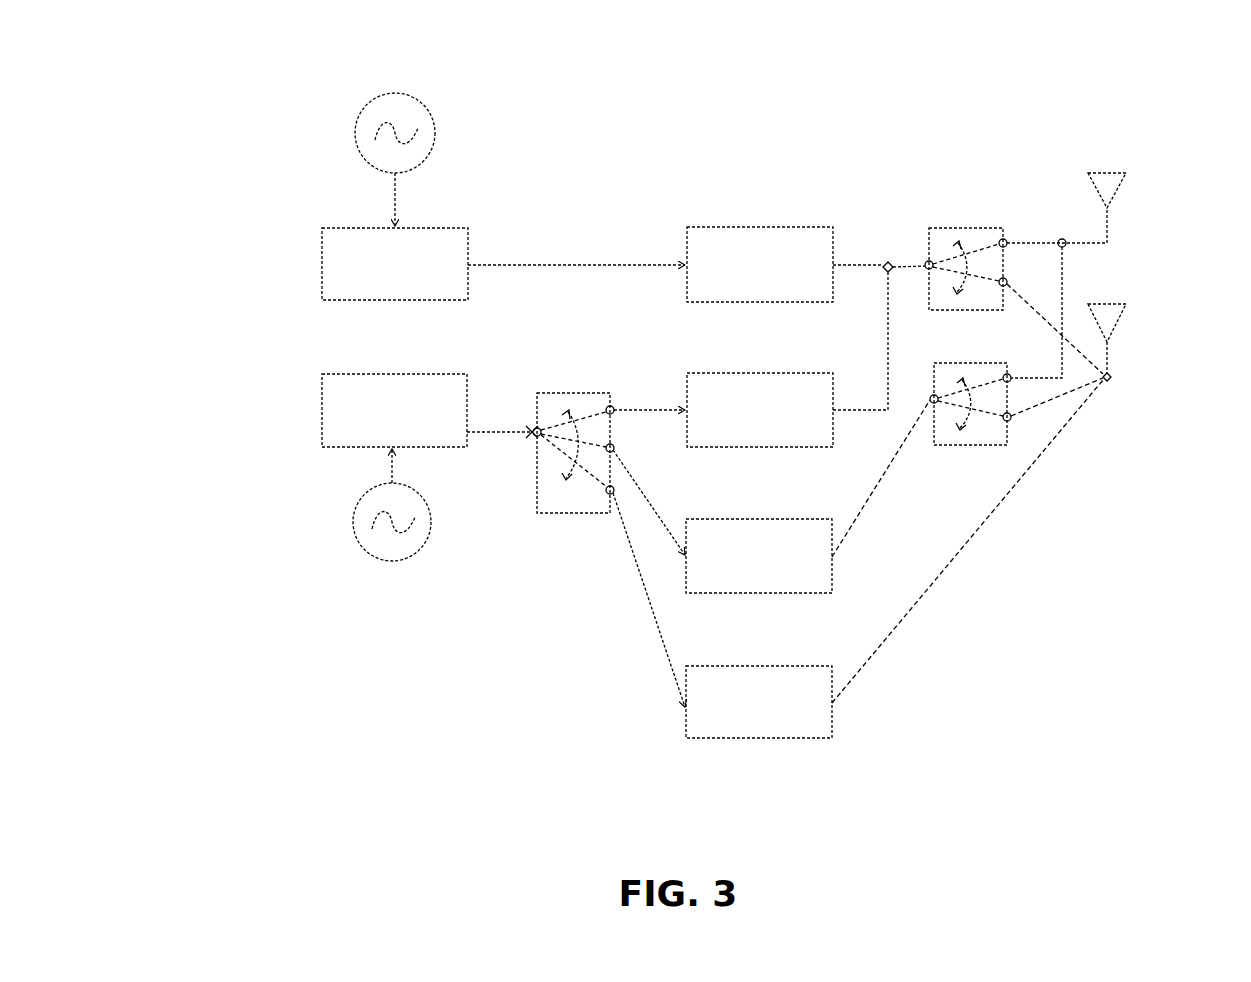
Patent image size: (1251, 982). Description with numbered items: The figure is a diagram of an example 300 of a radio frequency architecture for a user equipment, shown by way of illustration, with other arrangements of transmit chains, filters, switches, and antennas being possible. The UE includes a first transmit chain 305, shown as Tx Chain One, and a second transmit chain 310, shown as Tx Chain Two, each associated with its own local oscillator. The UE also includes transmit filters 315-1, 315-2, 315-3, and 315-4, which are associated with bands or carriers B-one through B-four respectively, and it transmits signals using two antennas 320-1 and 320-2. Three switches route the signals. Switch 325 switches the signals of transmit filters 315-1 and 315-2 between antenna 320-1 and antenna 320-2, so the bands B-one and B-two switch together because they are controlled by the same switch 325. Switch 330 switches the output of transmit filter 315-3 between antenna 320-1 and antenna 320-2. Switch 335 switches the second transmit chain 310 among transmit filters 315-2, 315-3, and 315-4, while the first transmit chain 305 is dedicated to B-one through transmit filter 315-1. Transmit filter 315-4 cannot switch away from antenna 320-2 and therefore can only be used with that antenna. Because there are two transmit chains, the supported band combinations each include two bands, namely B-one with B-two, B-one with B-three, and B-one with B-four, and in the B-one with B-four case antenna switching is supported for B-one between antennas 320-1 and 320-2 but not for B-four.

The radio frequency architecture example 300 is at (128, 62).
The first transmit chain 305 is at (322, 266).
The second transmit chain 310 is at (322, 413).
The transmit filter 315-1 is at (762, 228).
The transmit filter 315-2 is at (762, 373).
The transmit filter 315-3 is at (762, 519).
The transmit filter 315-4 is at (762, 666).
The antenna 320-1 is at (1128, 173).
The antenna 320-2 is at (1128, 304).
The switch 325 is at (970, 228).
The switch 330 is at (960, 448).
The switch 335 is at (558, 520).